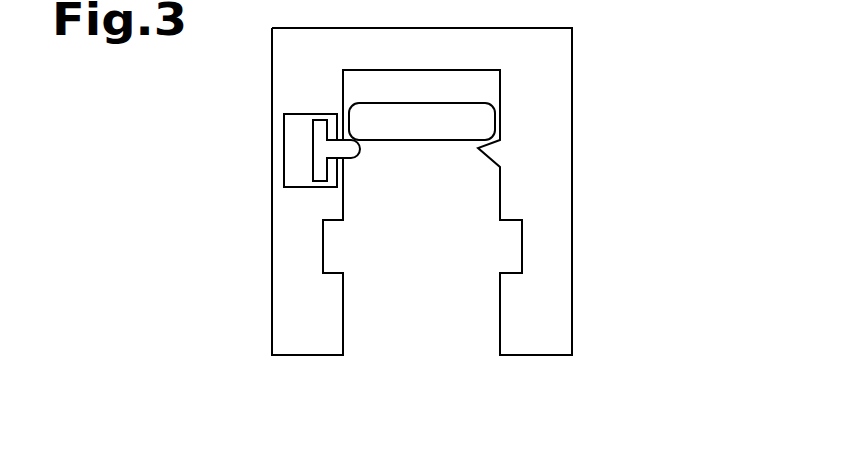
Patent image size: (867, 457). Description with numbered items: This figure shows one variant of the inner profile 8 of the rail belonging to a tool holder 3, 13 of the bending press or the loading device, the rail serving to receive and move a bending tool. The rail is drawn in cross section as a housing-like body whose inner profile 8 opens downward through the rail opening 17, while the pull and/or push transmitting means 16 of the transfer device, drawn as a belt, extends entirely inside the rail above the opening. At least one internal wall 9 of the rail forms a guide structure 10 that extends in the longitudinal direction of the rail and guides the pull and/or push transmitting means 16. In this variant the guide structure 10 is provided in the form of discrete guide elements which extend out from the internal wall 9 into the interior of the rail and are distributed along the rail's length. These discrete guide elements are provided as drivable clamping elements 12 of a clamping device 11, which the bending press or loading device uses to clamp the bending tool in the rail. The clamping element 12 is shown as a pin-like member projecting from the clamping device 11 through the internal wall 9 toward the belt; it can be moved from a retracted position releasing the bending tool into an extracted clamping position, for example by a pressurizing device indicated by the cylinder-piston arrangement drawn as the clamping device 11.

The tool holder 3 is at (572, 135).
The tool holder 13 is at (422, 191).
The inner profile 8 is at (474, 333).
The internal wall 9 is at (345, 327).
The guide structure 10 is at (369, 158).
The clamping device 11 is at (303, 110).
The clamping element 12 is at (351, 161).
The pull and/or push transmitting means 16 is at (429, 134).
The rail opening 17 is at (377, 355).